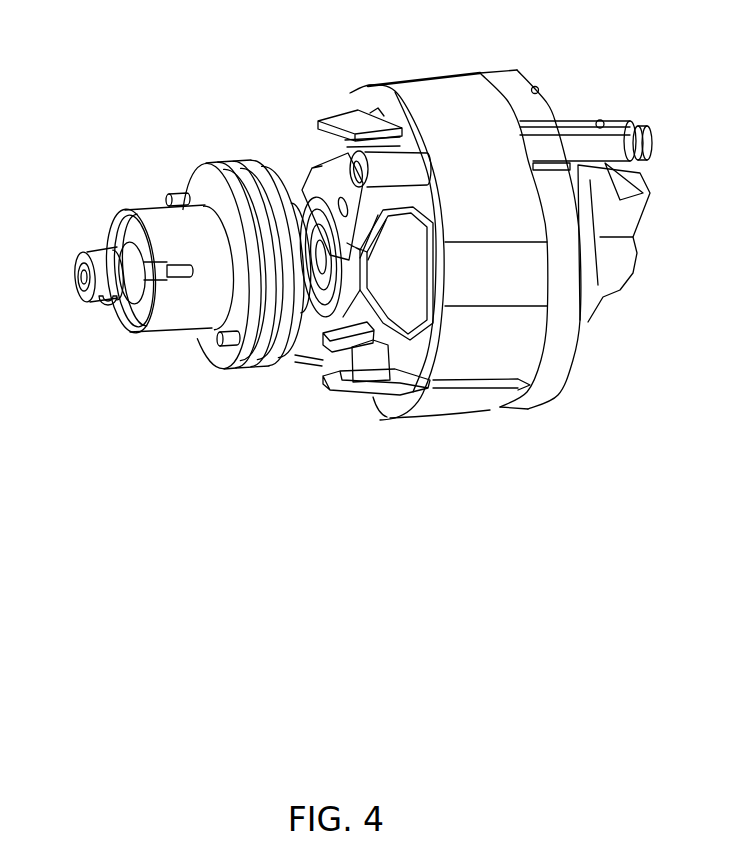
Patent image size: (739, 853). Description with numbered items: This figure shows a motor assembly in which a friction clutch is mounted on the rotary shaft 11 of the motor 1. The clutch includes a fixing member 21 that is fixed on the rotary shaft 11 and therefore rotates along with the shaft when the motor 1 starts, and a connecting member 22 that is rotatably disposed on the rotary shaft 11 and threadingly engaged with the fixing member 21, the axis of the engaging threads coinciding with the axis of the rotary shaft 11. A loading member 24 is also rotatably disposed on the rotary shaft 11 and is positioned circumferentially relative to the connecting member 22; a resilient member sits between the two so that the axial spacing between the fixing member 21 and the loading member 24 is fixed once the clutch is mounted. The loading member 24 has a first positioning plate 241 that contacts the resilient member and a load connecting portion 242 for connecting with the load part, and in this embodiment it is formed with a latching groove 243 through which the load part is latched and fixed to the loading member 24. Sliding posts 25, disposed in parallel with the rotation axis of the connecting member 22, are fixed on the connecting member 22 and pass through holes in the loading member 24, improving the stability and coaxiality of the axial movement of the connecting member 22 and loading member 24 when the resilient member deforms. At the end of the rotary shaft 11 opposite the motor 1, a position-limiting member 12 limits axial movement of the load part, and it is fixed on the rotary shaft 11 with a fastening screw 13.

The motor 1 is at (515, 413).
The rotary shaft 11 is at (134, 278).
The position-limiting member 12 is at (82, 302).
The fastening screw 13 is at (107, 308).
The fixing member 21 is at (300, 200).
The connecting member 22 is at (252, 160).
The loading member 24 is at (157, 36).
The first positioning plate 241 is at (212, 195).
The load connecting portion 242 is at (171, 234).
The latching groove 243 is at (172, 272).
The sliding posts 25 is at (213, 345).